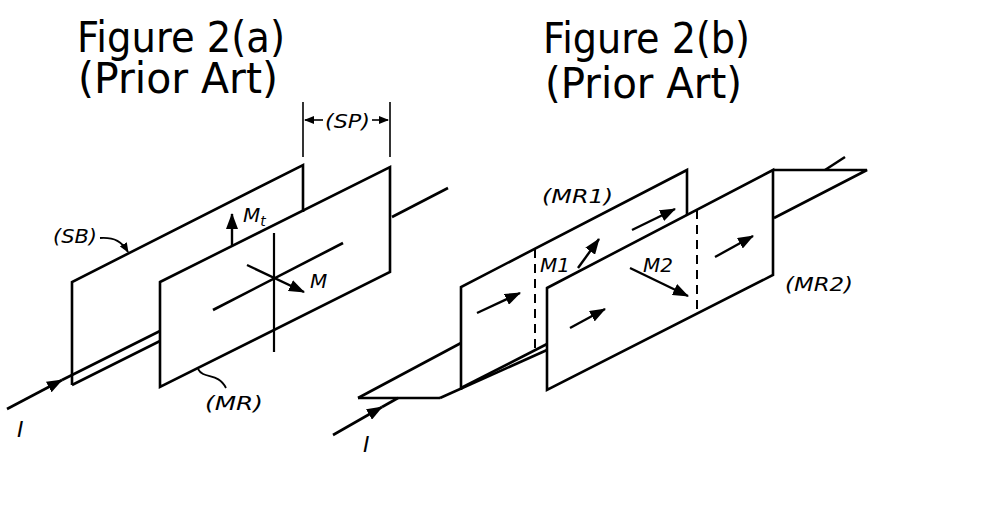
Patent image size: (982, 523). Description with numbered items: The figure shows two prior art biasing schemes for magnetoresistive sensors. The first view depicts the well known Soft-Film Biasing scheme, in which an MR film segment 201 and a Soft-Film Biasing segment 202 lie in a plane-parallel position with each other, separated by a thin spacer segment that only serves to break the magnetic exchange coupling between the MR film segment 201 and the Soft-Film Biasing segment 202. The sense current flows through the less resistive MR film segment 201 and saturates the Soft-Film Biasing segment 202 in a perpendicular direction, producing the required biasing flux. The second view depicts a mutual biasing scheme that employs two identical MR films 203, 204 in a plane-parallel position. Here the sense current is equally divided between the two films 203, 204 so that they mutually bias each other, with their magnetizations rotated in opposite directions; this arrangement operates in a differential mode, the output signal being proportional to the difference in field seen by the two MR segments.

In FIG. 2A, the MR film segment 201 is at (202, 308).
In FIG. 2A, the Soft-Film Biasing segment 202 is at (117, 308).
In FIG. 2B, the first MR film 203 is at (498, 361).
In FIG. 2B, the second MR film 204 is at (586, 361).